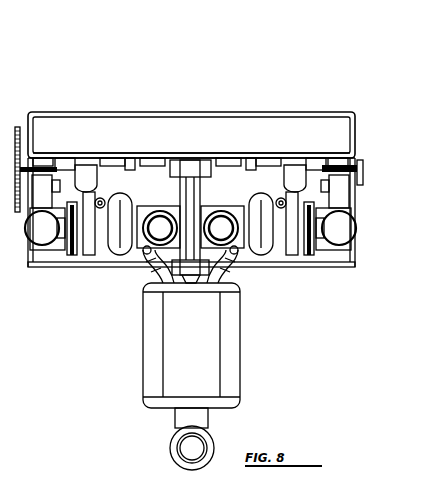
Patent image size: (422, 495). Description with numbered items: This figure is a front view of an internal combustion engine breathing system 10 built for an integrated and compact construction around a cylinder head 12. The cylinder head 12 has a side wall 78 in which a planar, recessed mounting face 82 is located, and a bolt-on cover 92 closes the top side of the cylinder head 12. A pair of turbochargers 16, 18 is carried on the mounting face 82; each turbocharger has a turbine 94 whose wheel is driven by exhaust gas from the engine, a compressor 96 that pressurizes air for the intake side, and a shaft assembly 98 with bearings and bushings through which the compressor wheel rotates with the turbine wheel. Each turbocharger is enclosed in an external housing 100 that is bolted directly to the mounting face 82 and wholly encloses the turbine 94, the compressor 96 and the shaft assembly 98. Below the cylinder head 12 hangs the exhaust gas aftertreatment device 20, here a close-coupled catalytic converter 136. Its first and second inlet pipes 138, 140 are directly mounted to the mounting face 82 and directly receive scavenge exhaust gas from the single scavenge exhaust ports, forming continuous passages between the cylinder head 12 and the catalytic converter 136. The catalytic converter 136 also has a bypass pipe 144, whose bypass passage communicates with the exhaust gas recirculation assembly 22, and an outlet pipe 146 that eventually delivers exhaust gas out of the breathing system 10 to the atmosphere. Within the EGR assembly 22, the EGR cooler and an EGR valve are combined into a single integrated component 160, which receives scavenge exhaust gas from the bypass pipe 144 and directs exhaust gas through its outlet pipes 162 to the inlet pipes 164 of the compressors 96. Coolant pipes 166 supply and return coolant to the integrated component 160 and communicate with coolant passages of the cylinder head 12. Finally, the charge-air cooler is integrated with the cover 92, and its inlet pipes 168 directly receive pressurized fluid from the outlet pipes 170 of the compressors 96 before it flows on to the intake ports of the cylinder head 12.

The internal combustion engine breathing system 10 is at (290, 63).
The cylinder head 12 is at (28, 265).
The turbocharger 16 is at (72, 267).
The turbocharger 18 is at (310, 262).
The exhaust gas aftertreatment device 20 is at (186, 376).
The exhaust gas recirculation assembly 22 is at (359, 131).
The side wall 78 is at (344, 256).
The mounting face 82 is at (326, 254).
The cover 92 is at (80, 132).
The turbine 94 is at (122, 260).
The compressor 96 is at (86, 258).
The shaft assembly 98 is at (91, 250).
The housing 100 is at (116, 190).
The catalytic converter 136 is at (155, 368).
The first inlet pipe 138 is at (137, 258).
The second inlet pipe 140 is at (244, 262).
The bypass pipe 144 is at (165, 172).
The outlet pipe 146 is at (205, 422).
The integrated component 160 is at (226, 130).
The outlet pipes 162 is at (344, 190).
The inlet pipes 164 is at (357, 222).
The coolant pipes 166 is at (222, 200).
The inlet pipes 168 is at (88, 160).
The outlet pipes 170 is at (80, 178).